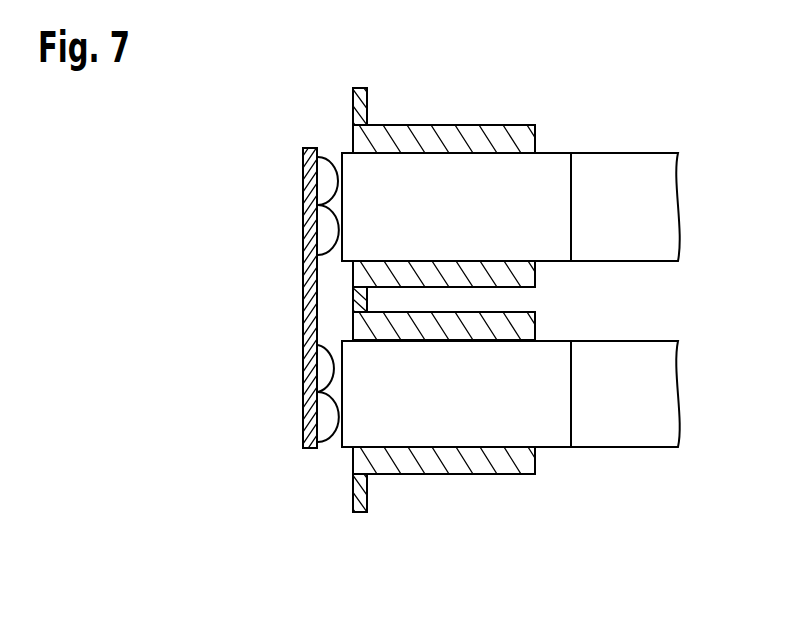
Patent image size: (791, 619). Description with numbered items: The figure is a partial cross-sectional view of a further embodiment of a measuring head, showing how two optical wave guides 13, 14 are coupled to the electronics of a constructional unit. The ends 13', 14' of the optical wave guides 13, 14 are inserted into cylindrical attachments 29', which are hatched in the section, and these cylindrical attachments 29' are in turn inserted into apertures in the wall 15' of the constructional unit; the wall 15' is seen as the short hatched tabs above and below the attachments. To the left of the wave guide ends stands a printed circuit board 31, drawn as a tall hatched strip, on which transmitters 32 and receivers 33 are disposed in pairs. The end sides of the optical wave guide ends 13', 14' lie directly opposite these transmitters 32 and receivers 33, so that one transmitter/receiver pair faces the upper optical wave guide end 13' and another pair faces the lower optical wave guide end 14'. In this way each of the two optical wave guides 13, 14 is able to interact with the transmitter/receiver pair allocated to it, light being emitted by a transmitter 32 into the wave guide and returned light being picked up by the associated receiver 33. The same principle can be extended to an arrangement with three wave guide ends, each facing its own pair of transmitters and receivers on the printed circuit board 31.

The wall 15' is at (333, 259).
The cylindrical attachment 29' is at (436, 296).
The end of optical wave guide 13' is at (471, 157).
The optical wave guide 13 is at (625, 157).
The end of optical wave guide 14' is at (465, 448).
The optical wave guide 14 is at (625, 448).
The printed circuit board 31 is at (312, 294).
The transmitter 32 is at (330, 178).
The receiver 33 is at (330, 233).